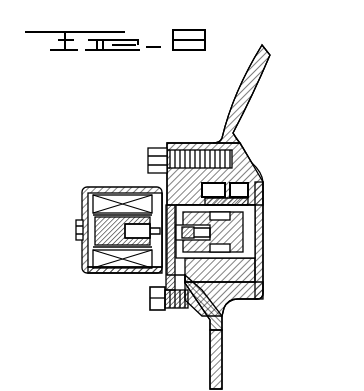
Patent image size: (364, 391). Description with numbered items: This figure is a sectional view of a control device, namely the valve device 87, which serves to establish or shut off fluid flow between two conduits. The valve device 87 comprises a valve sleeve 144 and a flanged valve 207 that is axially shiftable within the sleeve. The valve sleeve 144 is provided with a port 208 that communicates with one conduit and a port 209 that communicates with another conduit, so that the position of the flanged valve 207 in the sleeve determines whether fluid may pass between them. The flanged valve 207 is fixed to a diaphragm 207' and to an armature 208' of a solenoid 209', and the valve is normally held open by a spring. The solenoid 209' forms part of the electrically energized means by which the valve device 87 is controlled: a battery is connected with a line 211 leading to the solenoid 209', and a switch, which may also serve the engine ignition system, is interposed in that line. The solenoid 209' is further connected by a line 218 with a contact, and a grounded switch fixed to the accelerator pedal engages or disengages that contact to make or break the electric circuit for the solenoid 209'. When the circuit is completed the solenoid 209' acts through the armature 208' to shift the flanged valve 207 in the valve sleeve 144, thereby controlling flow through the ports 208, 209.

The valve sleeve 144 is at (263, 188).
The port 209 is at (252, 198).
The port 208 is at (254, 207).
The flanged valve 207 is at (239, 233).
The line 211 is at (98, 180).
The diaphragm 207' is at (125, 192).
The solenoid 209' is at (127, 272).
The armature 208' is at (122, 274).
The line 218 is at (100, 275).
The valve device 87 is at (181, 318).